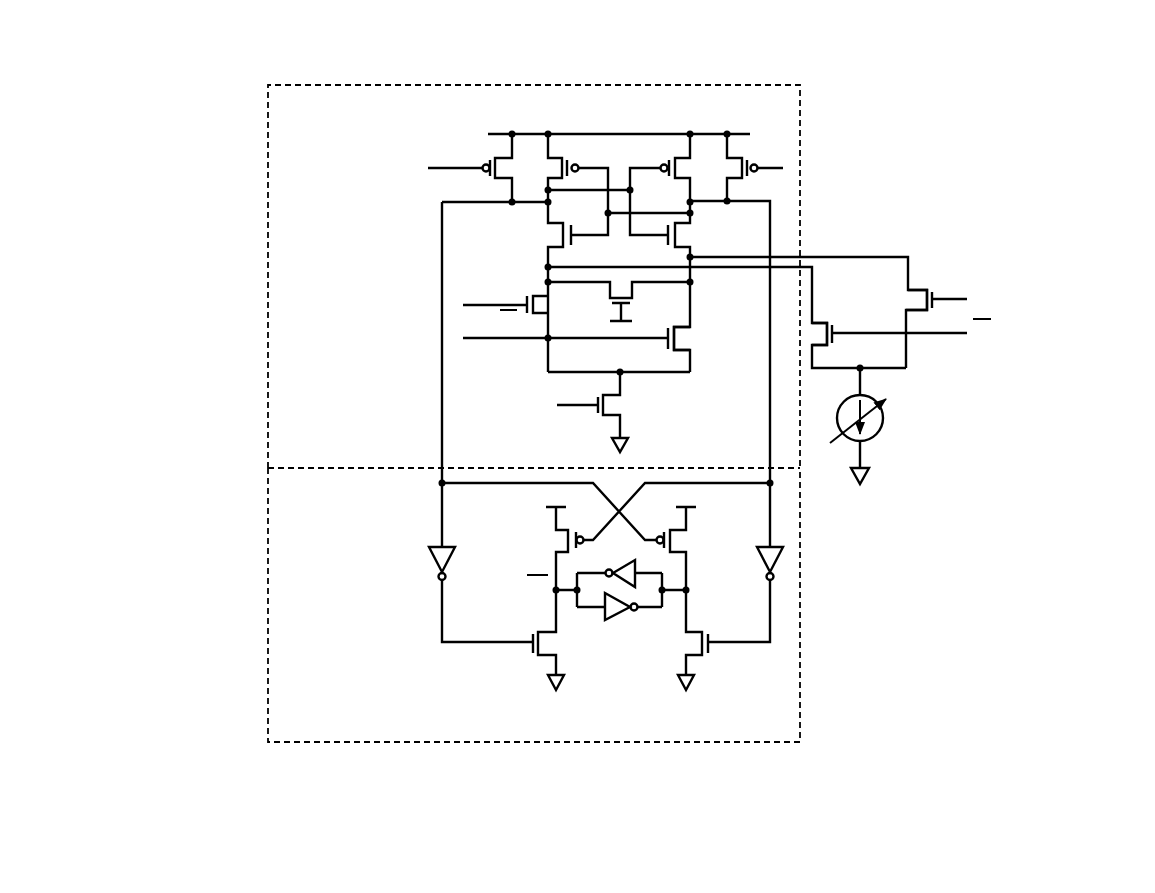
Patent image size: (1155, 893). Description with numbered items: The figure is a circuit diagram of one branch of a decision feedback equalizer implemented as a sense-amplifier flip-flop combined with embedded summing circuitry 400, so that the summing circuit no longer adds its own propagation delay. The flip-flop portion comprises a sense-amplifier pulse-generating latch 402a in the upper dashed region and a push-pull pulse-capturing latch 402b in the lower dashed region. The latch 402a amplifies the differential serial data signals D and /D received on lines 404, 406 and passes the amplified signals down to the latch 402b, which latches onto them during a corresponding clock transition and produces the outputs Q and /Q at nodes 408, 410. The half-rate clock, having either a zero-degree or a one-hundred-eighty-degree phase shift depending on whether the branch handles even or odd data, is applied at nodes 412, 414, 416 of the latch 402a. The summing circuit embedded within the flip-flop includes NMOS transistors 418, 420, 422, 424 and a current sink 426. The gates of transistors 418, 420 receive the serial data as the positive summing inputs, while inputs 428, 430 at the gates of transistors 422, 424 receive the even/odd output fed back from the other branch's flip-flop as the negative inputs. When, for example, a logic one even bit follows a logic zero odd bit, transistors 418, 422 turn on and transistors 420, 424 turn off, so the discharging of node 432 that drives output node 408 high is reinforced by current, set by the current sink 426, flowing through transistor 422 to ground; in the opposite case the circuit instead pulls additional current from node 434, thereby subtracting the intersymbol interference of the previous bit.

The SAFF combined with embedded summing circuitry 400 is at (262, 58).
The sense-amplifier pulse-generating latch 402a is at (630, 72).
The push-pull pulse-capturing latch 402b is at (638, 748).
The line 404 is at (470, 303).
The line 406 is at (470, 340).
The node 408 is at (688, 560).
The node 410 is at (556, 560).
The node 412 is at (470, 168).
The node 414 is at (783, 168).
The node 416 is at (580, 407).
The NMOS transistor 418 is at (543, 301).
The NMOS transistor 420 is at (680, 337).
The NMOS transistor 422 is at (836, 322).
The NMOS transistor 424 is at (931, 291).
The current sink 426 is at (886, 430).
The input 428 is at (950, 298).
The input 430 is at (953, 335).
The node 432 is at (442, 240).
The node 434 is at (770, 230).